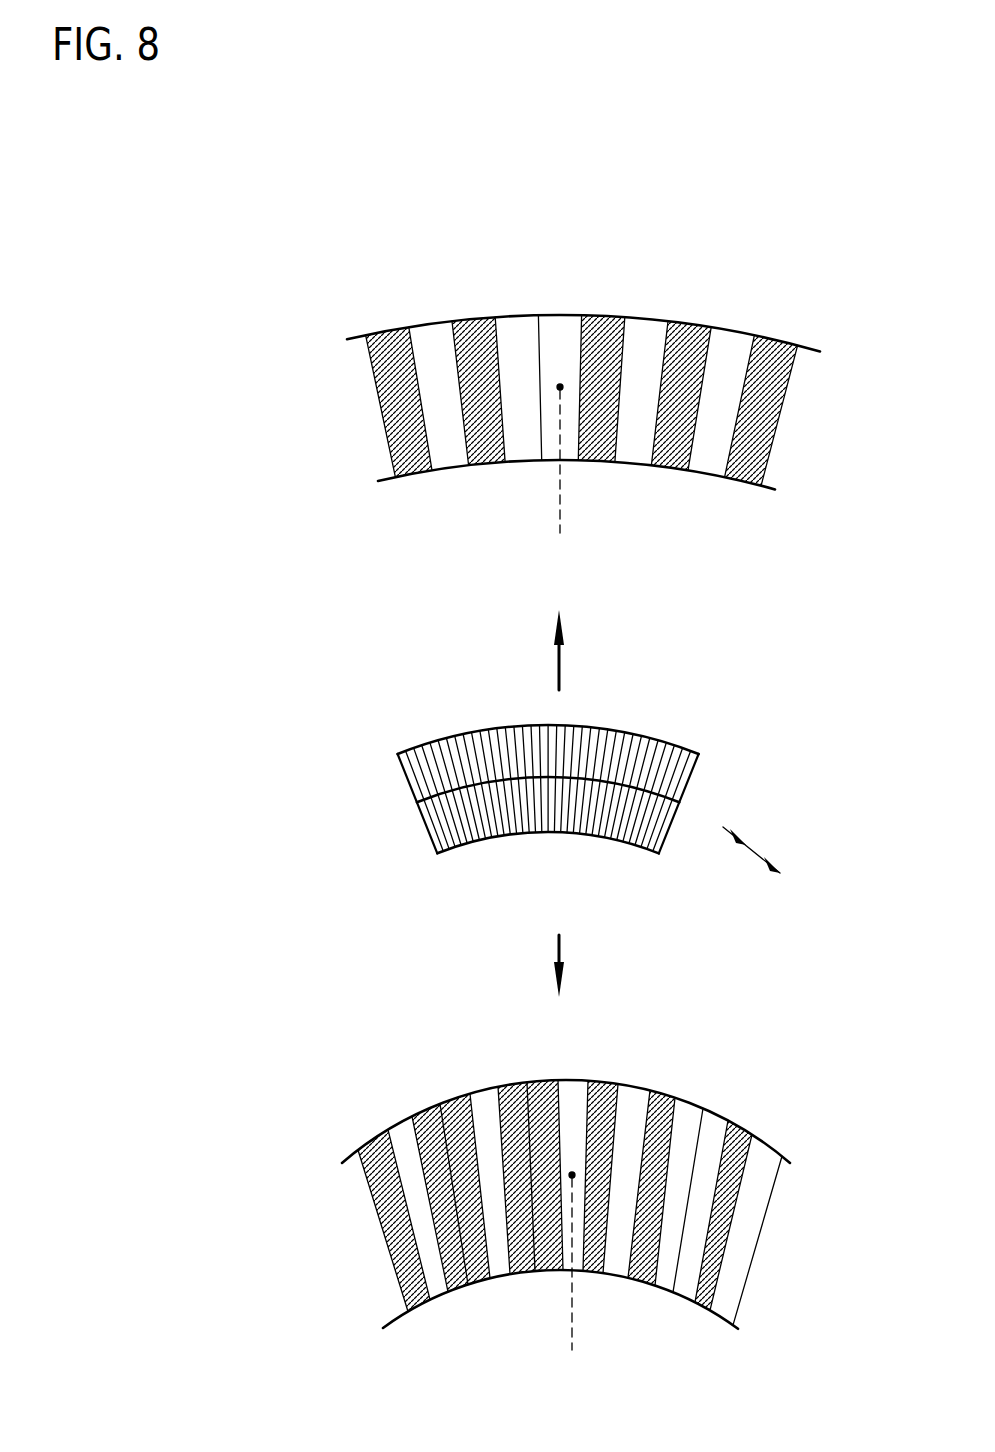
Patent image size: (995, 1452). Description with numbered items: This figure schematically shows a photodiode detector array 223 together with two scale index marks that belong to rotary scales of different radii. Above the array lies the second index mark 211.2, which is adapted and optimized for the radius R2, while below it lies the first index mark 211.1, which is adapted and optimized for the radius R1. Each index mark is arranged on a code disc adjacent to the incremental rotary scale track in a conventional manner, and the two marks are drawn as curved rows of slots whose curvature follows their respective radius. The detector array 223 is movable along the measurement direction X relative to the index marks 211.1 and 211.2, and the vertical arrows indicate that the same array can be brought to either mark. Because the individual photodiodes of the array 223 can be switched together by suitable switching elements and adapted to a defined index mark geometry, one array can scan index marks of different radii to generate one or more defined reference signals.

The second index mark 211.2 is at (345, 406).
The first index mark 211.1 is at (358, 1262).
The detector array 223 is at (372, 819).
The radius R1 is at (598, 1263).
The radius R2 is at (593, 458).
The measurement direction X is at (754, 840).